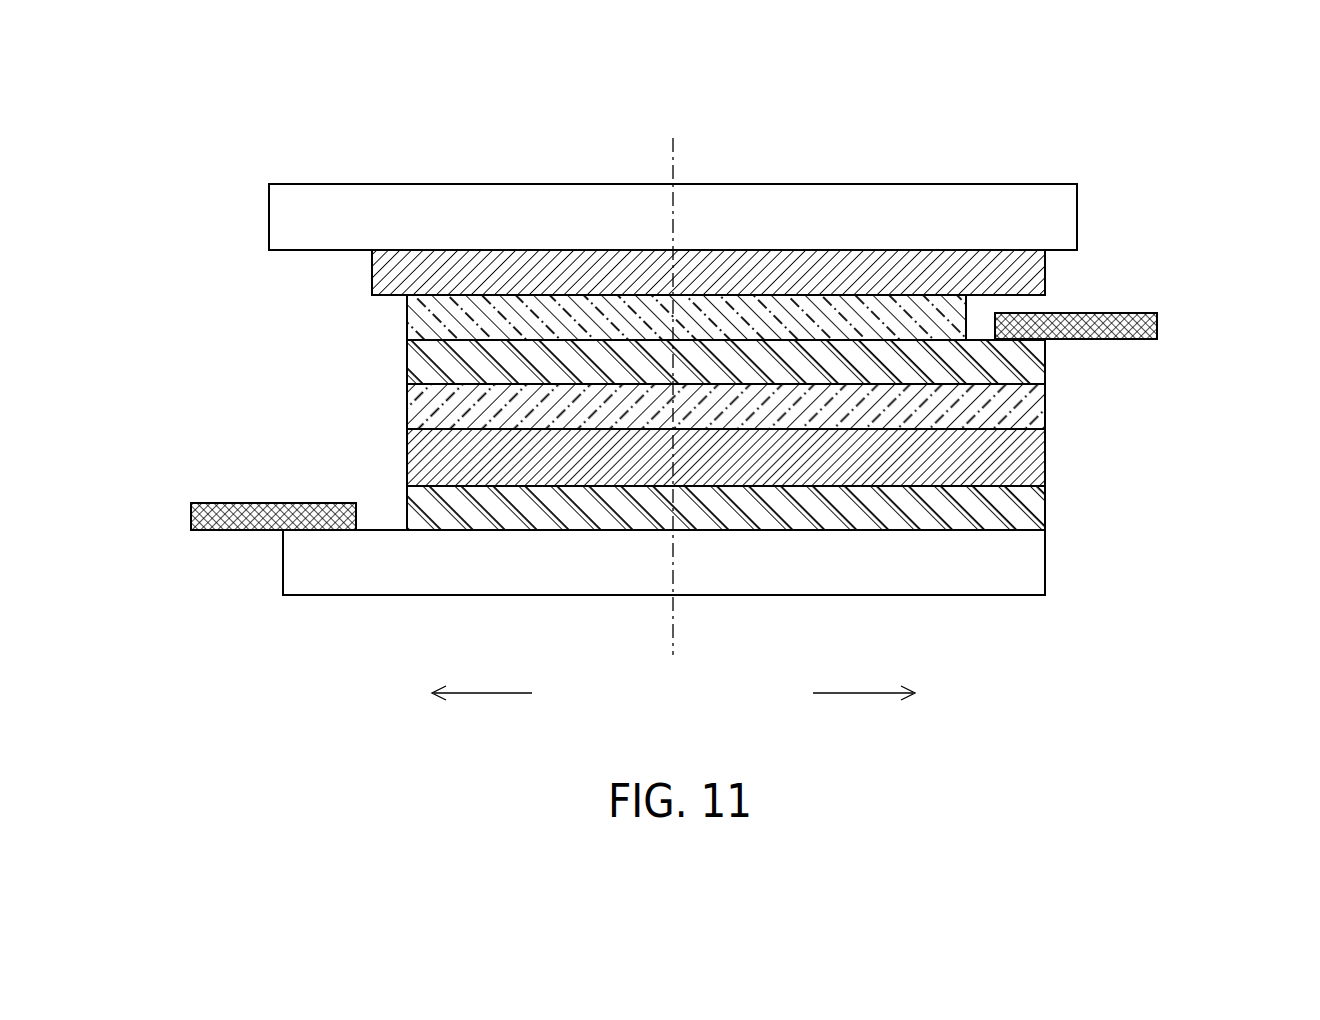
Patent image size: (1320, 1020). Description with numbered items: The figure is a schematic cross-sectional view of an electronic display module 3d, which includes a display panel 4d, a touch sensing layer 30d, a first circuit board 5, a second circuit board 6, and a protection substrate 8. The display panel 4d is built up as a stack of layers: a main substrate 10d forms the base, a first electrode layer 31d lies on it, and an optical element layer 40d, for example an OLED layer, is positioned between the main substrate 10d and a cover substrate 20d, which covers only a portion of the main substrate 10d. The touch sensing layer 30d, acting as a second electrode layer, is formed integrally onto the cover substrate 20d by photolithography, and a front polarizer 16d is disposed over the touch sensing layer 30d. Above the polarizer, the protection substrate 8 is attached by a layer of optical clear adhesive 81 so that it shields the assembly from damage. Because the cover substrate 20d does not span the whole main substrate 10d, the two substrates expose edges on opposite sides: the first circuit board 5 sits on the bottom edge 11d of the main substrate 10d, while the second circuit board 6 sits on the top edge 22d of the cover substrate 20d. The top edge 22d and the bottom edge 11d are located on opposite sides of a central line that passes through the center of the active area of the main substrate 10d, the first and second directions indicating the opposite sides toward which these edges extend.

The electronic display module 3d is at (222, 135).
The protection substrate 8 is at (290, 218).
The optical clear adhesive 81 is at (392, 275).
The front polarizer 16d is at (429, 318).
The second circuit board 6 is at (1158, 322).
The first circuit board 5 is at (190, 518).
The display panel 4d is at (1170, 493).
The touch sensing layer 30d is at (429, 362).
The top edge 22d is at (1045, 393).
The cover substrate 20d is at (1022, 413).
The optical element layer 40d is at (1045, 458).
The first electrode layer 31d is at (1030, 505).
The main substrate 10d is at (1022, 565).
The bottom edge 11d is at (283, 563).